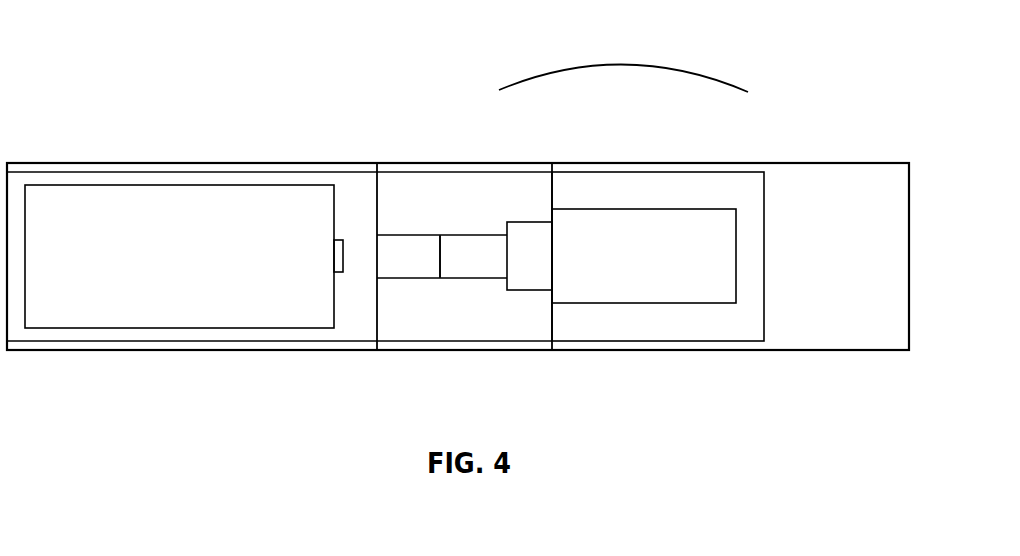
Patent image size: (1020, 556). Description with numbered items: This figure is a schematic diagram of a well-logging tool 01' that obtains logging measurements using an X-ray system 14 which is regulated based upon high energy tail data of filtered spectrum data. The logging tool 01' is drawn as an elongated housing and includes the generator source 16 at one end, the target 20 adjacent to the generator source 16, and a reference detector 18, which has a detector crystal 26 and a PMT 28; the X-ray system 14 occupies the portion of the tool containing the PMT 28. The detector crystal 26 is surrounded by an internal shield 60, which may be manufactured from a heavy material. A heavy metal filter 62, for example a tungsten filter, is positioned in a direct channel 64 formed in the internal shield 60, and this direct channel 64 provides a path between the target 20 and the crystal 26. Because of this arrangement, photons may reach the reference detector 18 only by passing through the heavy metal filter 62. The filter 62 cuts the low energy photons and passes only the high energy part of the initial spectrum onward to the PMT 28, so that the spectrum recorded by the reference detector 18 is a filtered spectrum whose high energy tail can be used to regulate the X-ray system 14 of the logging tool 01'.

The well-logging tool 01' is at (465, 239).
The generator source 16 is at (163, 257).
The target 20 is at (333, 257).
The internal shield 60 is at (400, 171).
The direct channel 64 is at (417, 252).
The heavy metal filter 62 is at (463, 252).
The detector crystal 26 is at (530, 243).
The PMT 28 is at (657, 257).
The X-ray system 14 is at (765, 257).
The reference detector 18 is at (623, 63).